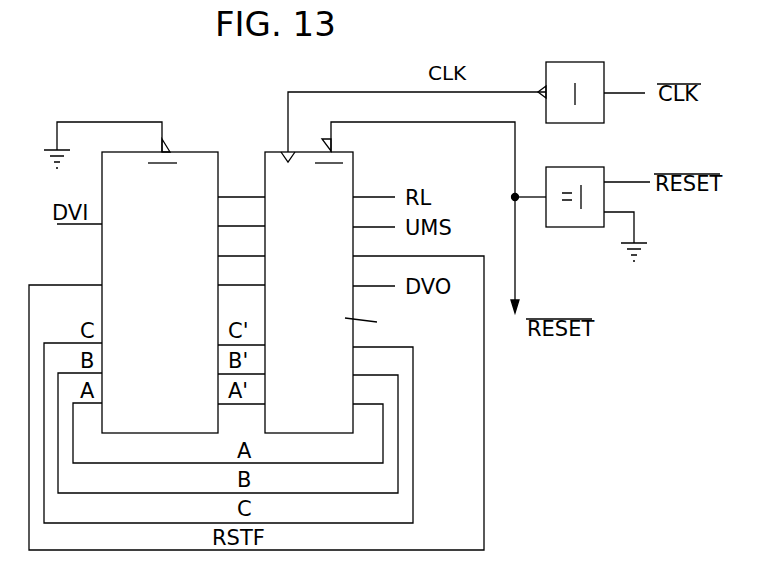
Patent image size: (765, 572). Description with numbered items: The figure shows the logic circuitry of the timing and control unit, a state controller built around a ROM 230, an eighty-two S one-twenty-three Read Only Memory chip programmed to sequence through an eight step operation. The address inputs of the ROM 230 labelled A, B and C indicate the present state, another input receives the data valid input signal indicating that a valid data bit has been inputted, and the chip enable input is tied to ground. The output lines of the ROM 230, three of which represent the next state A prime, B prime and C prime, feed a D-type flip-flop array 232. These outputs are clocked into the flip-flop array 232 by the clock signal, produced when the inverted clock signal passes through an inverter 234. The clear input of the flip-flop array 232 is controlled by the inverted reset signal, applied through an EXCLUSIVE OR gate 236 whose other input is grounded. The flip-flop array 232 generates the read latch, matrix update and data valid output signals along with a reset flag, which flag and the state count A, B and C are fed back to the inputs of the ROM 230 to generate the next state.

The ROM 230 is at (193, 158).
The D-type flip-flop array 232 is at (353, 164).
The inverter 234 is at (583, 72).
The EXCLUSIVE OR gate 236 is at (575, 173).